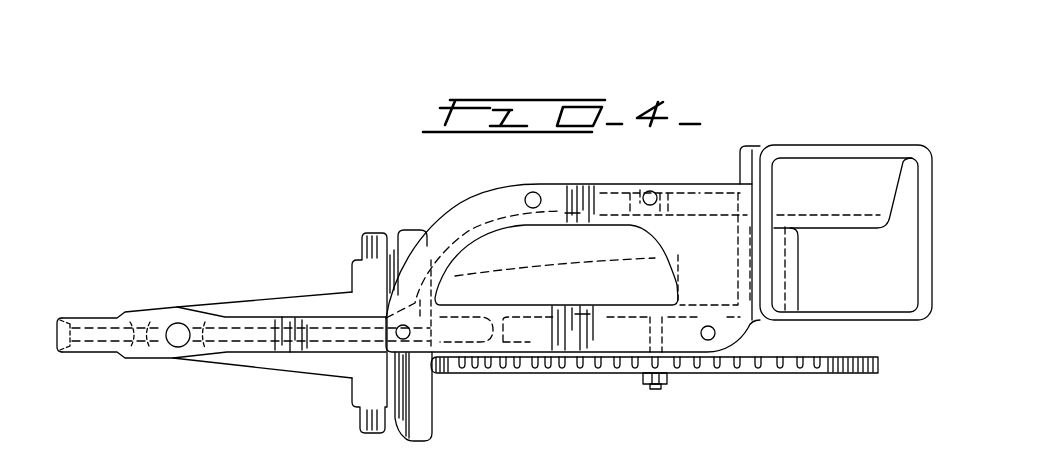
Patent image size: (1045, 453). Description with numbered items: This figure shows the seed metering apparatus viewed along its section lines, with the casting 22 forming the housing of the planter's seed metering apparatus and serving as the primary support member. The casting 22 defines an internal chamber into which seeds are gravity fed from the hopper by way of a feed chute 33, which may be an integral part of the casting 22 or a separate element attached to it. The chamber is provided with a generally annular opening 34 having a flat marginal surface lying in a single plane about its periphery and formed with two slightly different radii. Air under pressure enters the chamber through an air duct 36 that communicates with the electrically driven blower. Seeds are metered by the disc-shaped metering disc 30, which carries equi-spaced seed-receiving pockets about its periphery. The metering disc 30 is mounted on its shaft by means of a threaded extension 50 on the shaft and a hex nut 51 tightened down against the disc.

The casting 22 is at (290, 300).
The metering disc 30 is at (878, 365).
The feed chute 33 is at (588, 261).
The annular opening 34 is at (812, 363).
The air duct 36 is at (873, 268).
The threaded extension 50 is at (661, 390).
The hex nut 51 is at (642, 381).